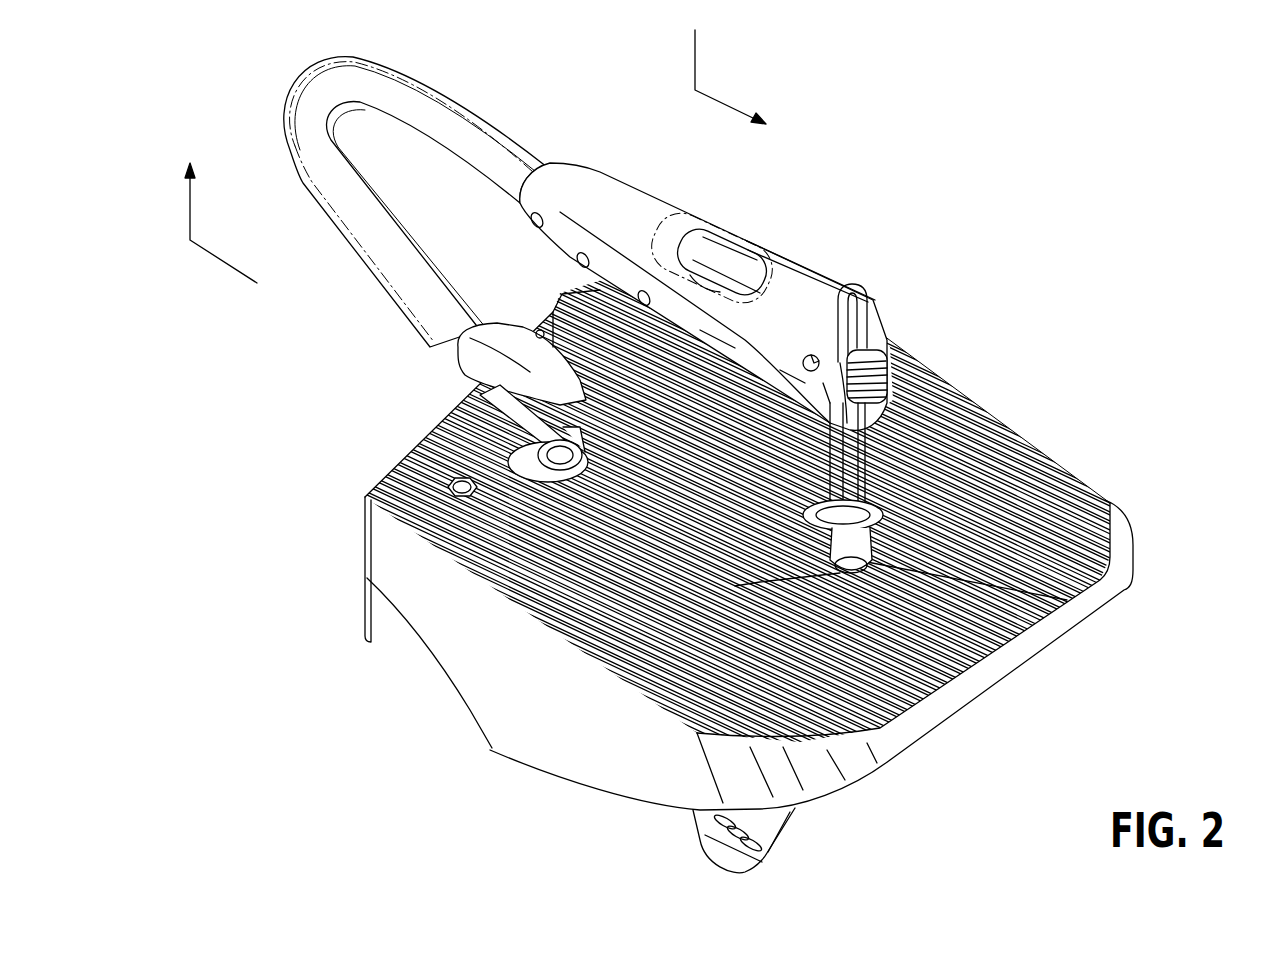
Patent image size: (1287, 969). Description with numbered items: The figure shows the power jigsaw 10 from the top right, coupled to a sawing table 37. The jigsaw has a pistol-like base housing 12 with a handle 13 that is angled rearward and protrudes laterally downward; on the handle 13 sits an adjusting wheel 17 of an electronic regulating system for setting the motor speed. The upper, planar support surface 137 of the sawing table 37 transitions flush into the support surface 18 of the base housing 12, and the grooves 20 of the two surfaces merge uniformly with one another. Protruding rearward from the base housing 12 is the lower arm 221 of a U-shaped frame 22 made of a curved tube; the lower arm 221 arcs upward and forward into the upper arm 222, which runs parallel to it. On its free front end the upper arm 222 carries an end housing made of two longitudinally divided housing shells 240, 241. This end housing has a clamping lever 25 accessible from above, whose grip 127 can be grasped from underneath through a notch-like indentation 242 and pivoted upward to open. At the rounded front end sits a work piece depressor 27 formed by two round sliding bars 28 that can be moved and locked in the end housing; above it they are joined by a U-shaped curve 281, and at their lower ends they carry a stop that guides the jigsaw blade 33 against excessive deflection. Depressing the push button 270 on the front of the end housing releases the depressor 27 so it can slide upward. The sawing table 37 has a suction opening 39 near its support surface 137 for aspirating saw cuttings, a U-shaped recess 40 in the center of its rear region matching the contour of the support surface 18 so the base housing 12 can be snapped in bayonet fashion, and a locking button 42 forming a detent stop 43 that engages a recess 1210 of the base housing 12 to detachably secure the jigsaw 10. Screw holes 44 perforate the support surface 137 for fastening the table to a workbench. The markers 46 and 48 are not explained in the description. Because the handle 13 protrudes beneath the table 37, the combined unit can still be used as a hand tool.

The power jigsaw 10 is at (583, 134).
The base housing 12 is at (480, 360).
The handle 13 is at (777, 837).
The adjusting wheel 17 is at (797, 813).
The support surface 18 is at (552, 318).
The grooves 20 is at (761, 511).
The U-shaped frame 22 is at (382, 201).
The clamping lever 25 is at (770, 250).
The work piece depressor 27 is at (875, 443).
The sliding bars 28 is at (870, 300).
The jigsaw blade 33 is at (813, 427).
The sawing table 37 is at (507, 727).
The suction opening 39 is at (1092, 612).
The recess 40 is at (533, 326).
The locking button 42 is at (515, 450).
The detent stop 43 is at (565, 420).
The screw holes 44 is at (430, 467).
The vertical axis 46 is at (230, 262).
The horizontal axis 48 is at (748, 96).
The grip 127 is at (730, 240).
The support surface 137 is at (1043, 473).
The lower arm 221 is at (430, 313).
The upper arm 222 is at (482, 136).
The housing shell 240 is at (613, 237).
The housing shell 241 is at (810, 292).
The indentation 242 is at (703, 213).
The push button 270 is at (883, 353).
The U-shaped curve 281 is at (862, 300).
The recess 1210 is at (543, 400).